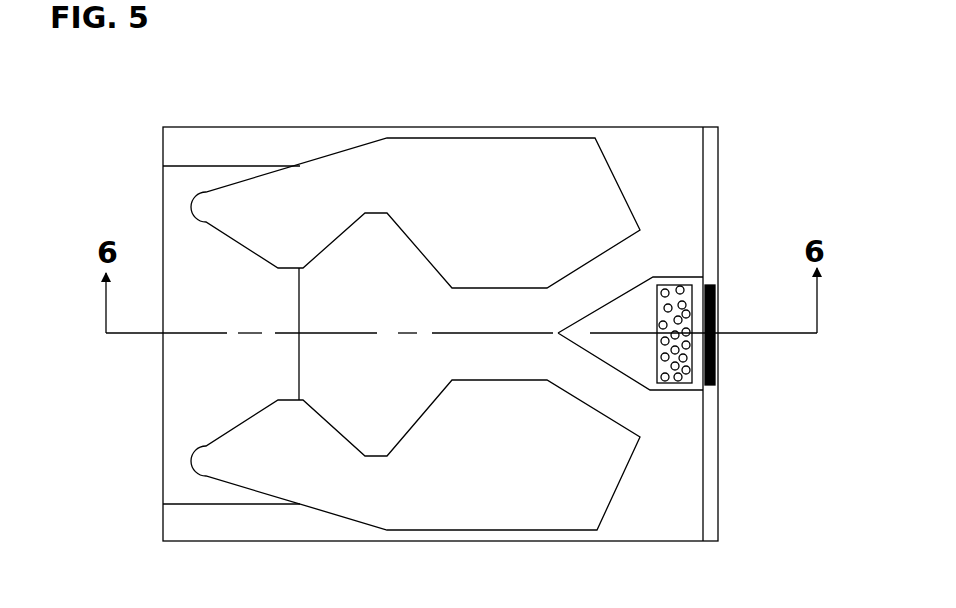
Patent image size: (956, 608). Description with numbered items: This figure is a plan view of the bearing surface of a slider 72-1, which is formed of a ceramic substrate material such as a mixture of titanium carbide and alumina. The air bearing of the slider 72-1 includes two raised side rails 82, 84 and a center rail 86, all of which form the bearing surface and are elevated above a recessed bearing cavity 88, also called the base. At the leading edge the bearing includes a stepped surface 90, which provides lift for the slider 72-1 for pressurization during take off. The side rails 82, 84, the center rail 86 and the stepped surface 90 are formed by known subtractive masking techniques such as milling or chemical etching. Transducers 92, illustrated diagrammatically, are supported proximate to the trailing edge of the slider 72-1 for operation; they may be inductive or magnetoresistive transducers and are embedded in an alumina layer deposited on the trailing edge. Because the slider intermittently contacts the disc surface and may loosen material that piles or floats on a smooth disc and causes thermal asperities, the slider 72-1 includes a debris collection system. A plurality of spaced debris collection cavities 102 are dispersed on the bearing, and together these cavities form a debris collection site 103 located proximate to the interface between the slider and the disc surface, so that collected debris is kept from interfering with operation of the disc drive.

The slider 72-1 is at (699, 114).
The raised side rail 82 is at (519, 217).
The raised side rail 84 is at (519, 482).
The center rail 86 is at (611, 314).
The recessed bearing cavity 88 is at (386, 309).
The stepped surface 90 is at (244, 309).
The transducers 92 is at (716, 326).
The debris collection cavities 102 is at (692, 320).
The debris collection site 103 is at (678, 334).